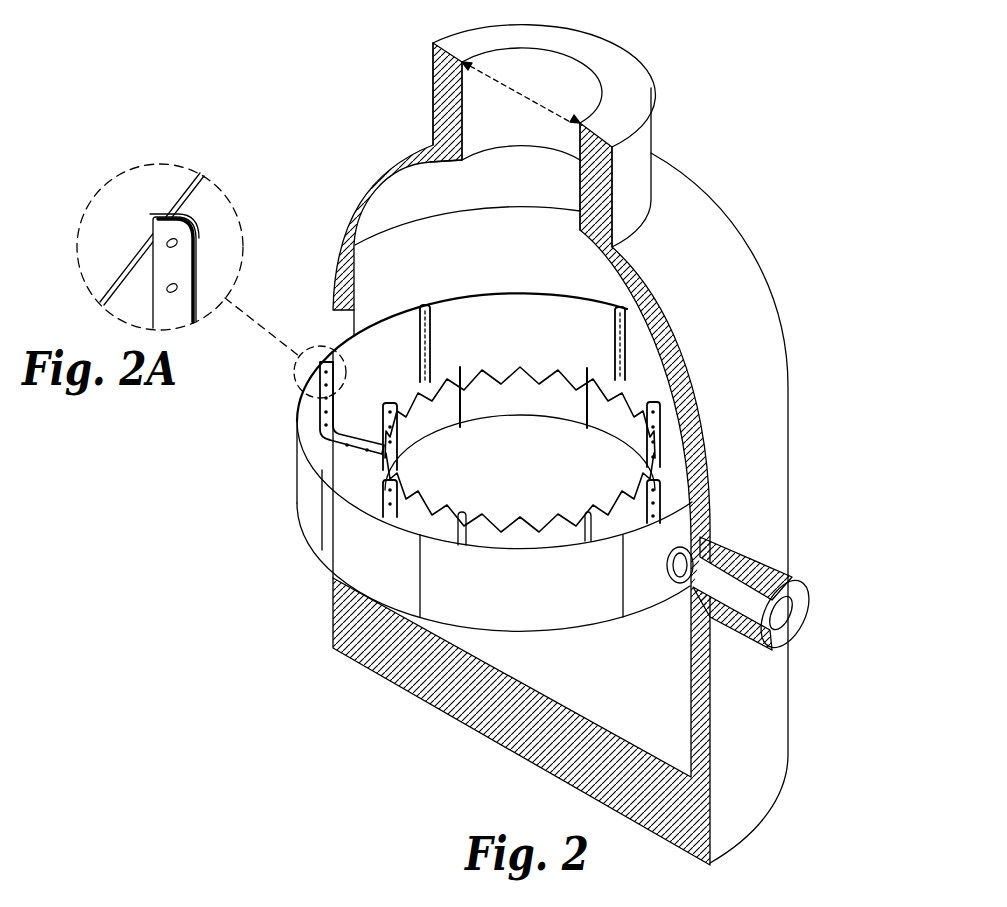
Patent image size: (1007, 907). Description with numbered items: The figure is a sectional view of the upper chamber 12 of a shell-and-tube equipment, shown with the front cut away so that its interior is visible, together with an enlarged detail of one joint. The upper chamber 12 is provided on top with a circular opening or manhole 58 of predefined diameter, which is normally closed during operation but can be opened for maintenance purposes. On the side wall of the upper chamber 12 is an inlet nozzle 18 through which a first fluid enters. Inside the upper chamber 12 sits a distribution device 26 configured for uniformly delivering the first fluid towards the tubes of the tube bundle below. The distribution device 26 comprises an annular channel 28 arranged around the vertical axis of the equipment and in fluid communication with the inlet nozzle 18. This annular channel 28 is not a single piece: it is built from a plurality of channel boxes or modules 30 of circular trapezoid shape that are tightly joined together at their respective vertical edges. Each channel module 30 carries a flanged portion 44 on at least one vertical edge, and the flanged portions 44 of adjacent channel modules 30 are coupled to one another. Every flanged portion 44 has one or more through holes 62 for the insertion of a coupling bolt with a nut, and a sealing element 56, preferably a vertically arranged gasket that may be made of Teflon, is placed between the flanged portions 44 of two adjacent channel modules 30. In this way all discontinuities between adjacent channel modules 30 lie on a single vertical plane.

In FIG. 2, the upper chamber 12 is at (782, 313).
In FIG. 2, the circular opening or manhole 58 is at (627, 77).
In FIG. 2, the inlet nozzle 18 is at (797, 597).
In FIG. 2, the distribution device 26 is at (458, 477).
In FIG. 2, the channel module 30 is at (553, 594).
In FIG. 2, the annular channel 28 is at (364, 428).
In FIG. 2A, the flanged portion 44 is at (155, 225).
In FIG. 2A, the sealing element 56 is at (153, 217).
In FIG. 2A, the through hole 62 is at (165, 243).